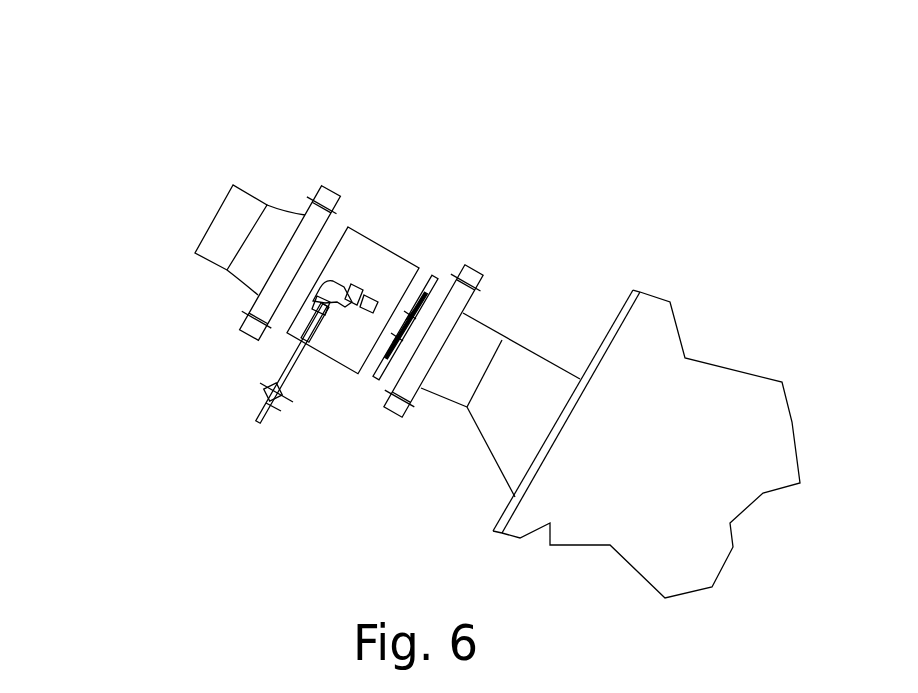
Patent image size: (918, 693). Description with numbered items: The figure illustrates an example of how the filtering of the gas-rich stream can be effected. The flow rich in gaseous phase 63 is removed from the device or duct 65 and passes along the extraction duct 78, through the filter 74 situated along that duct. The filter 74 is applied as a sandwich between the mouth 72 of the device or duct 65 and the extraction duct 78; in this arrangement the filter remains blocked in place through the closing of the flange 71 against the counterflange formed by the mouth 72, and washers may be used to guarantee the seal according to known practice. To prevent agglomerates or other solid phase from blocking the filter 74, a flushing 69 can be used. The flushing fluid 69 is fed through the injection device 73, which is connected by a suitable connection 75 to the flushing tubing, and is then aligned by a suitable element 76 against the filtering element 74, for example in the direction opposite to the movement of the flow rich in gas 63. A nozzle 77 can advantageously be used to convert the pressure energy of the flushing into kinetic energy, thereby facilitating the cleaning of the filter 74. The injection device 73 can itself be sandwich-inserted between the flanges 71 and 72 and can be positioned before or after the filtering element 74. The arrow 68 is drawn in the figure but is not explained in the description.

The flow rich in gaseous phase 63 is at (646, 444).
The device or duct 65 is at (705, 360).
The direction arrow 68 is at (115, 149).
The flushing 69 is at (210, 503).
The flange 71 is at (340, 187).
The mouth 72 is at (487, 270).
The injection device 73 is at (333, 356).
The filter 74 is at (432, 274).
The connection 75 is at (284, 410).
The aligning element 76 is at (336, 279).
The nozzle 77 is at (378, 300).
The extraction duct 78 is at (250, 196).